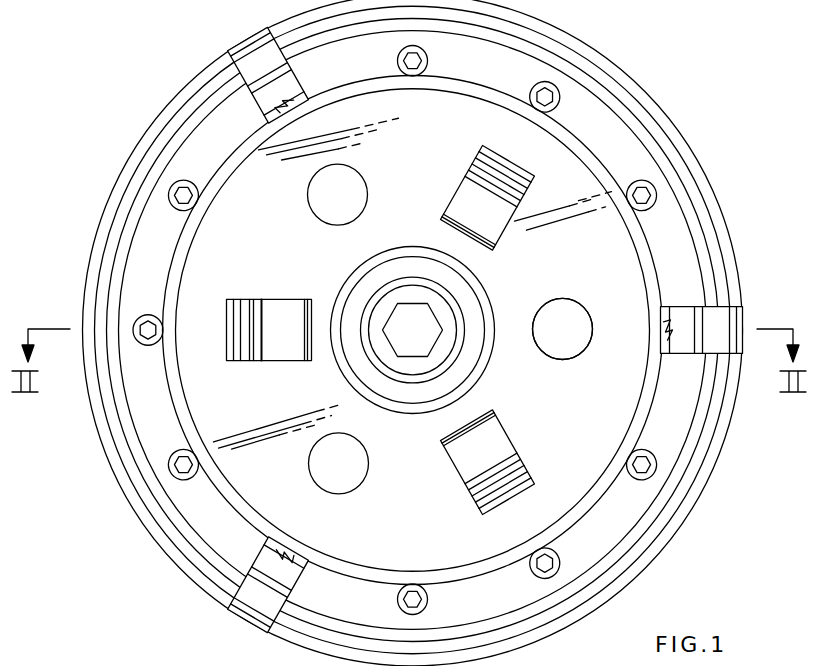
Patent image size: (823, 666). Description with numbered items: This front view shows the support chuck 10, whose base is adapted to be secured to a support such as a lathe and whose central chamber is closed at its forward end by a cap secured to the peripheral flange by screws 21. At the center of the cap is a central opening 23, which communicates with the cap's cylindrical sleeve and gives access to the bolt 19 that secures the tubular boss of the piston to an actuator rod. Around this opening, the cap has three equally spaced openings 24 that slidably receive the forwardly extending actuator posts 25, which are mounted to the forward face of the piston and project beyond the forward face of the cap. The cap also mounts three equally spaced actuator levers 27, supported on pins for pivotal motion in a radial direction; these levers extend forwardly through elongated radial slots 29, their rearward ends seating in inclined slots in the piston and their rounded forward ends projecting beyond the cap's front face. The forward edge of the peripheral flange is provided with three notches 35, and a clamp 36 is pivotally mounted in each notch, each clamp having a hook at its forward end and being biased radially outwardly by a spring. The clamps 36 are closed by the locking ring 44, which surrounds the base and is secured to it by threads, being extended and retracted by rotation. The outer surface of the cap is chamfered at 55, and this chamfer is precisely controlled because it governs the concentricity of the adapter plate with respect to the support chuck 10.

The support chuck 10 is at (712, 116).
The bolt 19 is at (418, 313).
The screws 21 is at (428, 60).
The central opening 23 is at (485, 362).
The openings 24 is at (560, 299).
The actuator posts 25 is at (566, 321).
The actuator levers 27 is at (277, 315).
The elongated radial slots 29 is at (263, 373).
The notches 35 is at (308, 69).
The clamp 36 is at (255, 62).
The locking ring 44 is at (722, 463).
The chamfer 55 is at (187, 522).